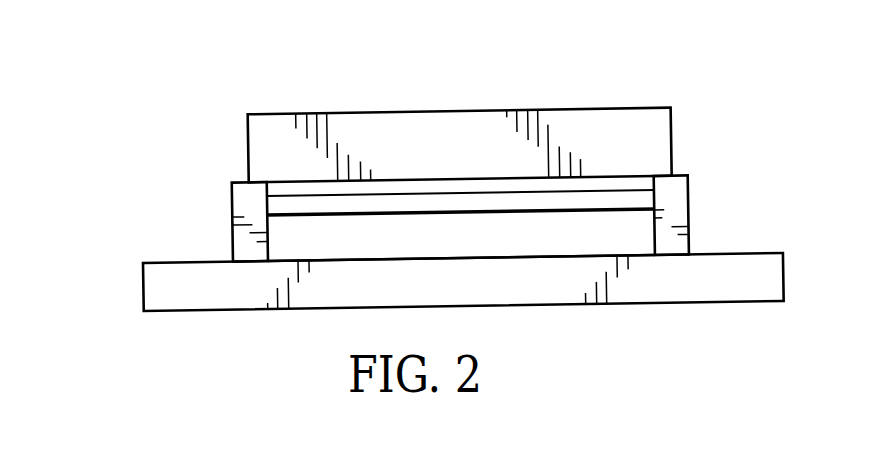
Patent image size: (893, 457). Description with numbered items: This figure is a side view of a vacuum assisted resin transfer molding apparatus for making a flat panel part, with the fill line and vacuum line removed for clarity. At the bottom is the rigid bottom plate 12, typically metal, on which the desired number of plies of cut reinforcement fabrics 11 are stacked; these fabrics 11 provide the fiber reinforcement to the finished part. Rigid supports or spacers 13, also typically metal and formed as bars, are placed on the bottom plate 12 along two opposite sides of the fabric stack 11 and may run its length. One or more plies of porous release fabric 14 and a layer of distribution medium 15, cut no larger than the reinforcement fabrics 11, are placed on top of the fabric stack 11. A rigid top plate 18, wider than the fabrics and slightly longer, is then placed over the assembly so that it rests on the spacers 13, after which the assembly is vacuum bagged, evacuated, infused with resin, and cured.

The cut reinforcement fabrics 11 is at (620, 232).
The rigid bottom plate 12 is at (143, 285).
The rigid supports or spacers 13 is at (233, 238).
The porous release fabric 14 is at (288, 208).
The distribution medium 15 is at (307, 190).
The rigid top plate 18 is at (458, 132).